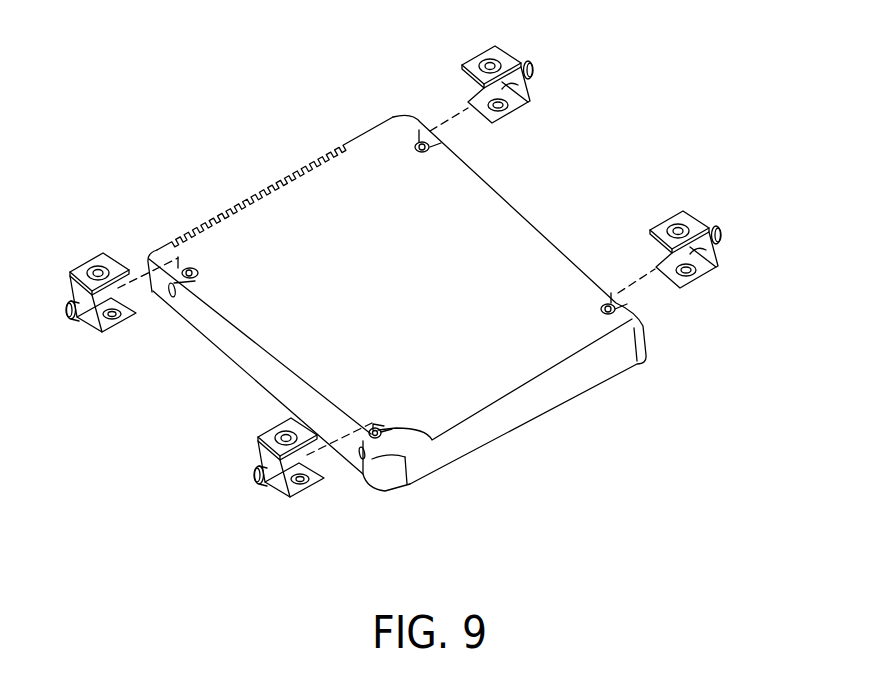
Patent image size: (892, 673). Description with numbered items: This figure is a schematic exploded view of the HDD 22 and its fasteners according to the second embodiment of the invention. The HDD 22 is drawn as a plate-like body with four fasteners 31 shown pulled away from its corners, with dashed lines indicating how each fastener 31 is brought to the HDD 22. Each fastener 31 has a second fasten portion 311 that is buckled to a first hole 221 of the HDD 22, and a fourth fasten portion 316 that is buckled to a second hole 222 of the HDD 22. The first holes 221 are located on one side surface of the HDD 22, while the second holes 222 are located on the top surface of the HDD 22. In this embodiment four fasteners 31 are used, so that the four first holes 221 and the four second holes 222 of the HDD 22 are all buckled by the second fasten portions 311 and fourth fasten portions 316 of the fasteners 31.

The HDD 22 is at (518, 410).
The first hole 221 is at (363, 480).
The second hole 222 is at (195, 281).
The fastener 31 is at (466, 41).
The second fasten portion 311 is at (702, 254).
The fourth fasten portion 316 is at (133, 320).